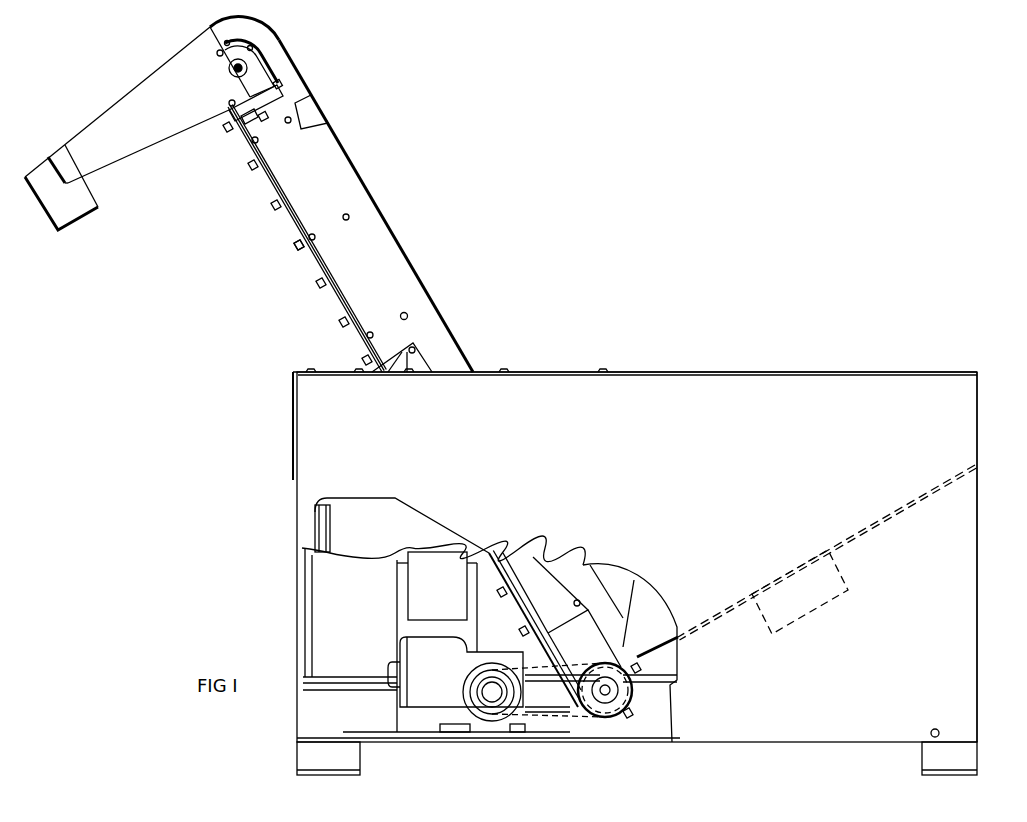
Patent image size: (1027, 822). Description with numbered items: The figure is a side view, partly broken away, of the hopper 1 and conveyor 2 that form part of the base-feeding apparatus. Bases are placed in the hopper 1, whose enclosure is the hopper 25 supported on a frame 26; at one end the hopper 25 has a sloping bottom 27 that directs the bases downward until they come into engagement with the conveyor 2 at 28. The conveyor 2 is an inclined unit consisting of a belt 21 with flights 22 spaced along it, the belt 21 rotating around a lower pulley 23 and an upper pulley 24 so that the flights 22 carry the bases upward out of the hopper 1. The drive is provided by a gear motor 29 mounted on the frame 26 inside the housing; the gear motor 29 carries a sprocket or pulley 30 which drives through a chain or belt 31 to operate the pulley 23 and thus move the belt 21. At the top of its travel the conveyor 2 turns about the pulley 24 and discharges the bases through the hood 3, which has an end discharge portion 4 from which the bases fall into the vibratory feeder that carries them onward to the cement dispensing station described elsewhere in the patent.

The hopper 1 is at (753, 437).
The conveyor 2 is at (273, 190).
The hood 3 is at (118, 150).
The end discharge portion 4 is at (63, 217).
The belt 21 is at (293, 228).
The flights 22 is at (298, 250).
The pulley 23 is at (635, 700).
The pulley 24 is at (240, 58).
The hopper 25 is at (977, 455).
The frame 26 is at (981, 707).
The sloping bottom 27 is at (888, 517).
The point of engagement 28 is at (592, 620).
The gear motor 29 is at (440, 697).
The sprocket or pulley 30 is at (492, 700).
The chain or belt 31 is at (563, 713).